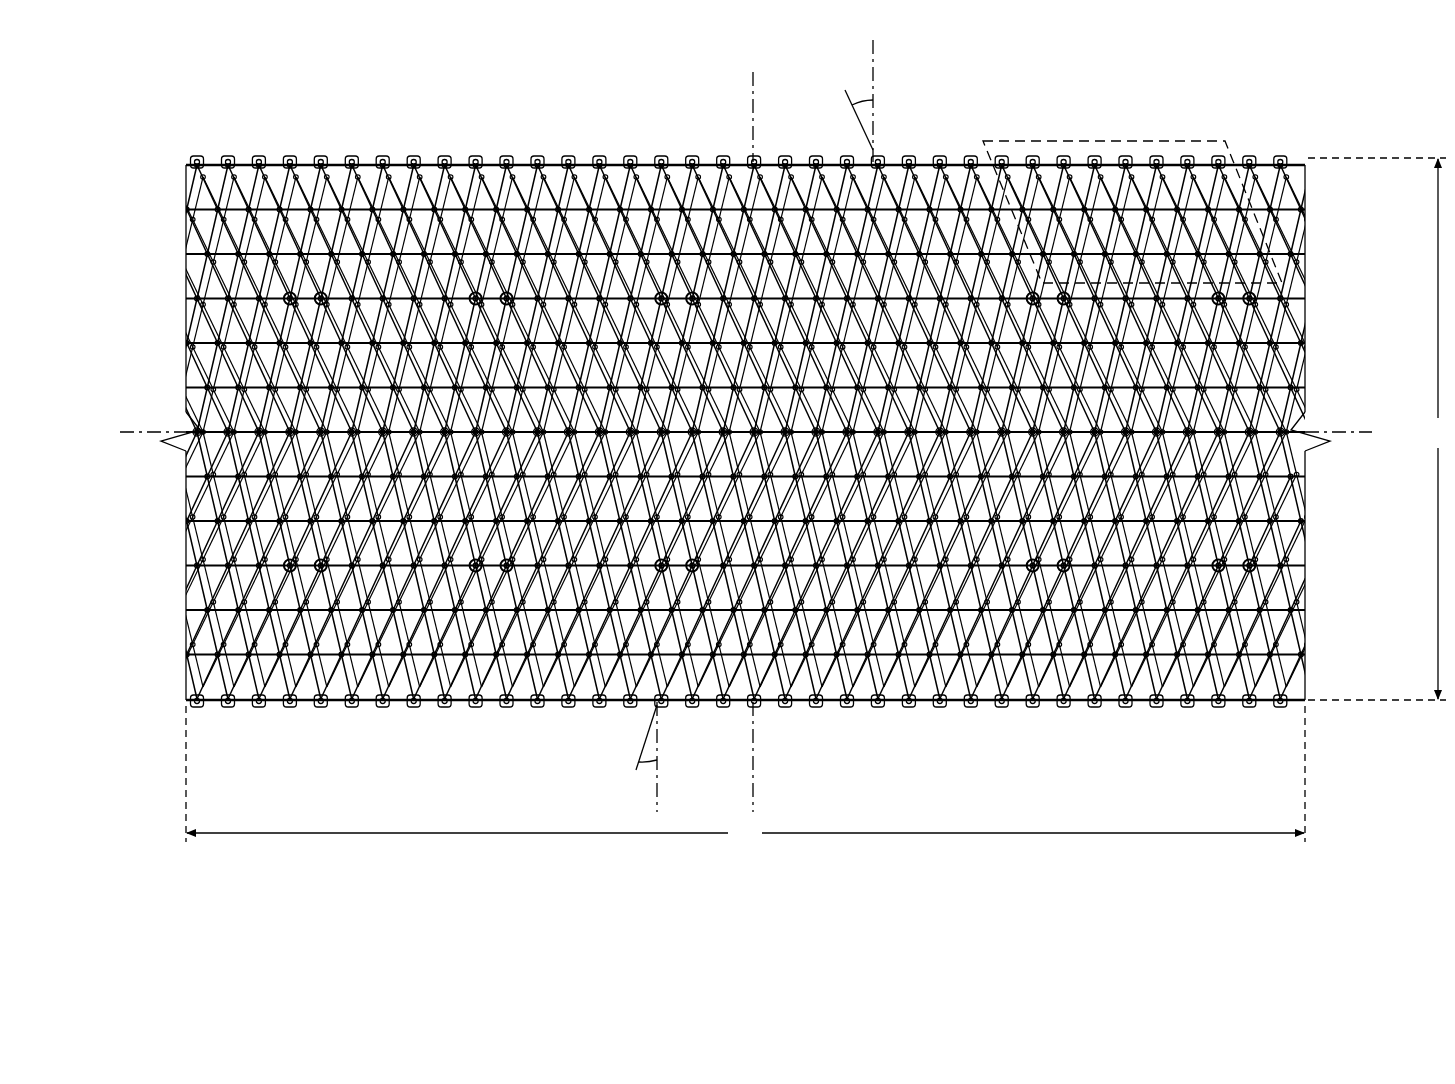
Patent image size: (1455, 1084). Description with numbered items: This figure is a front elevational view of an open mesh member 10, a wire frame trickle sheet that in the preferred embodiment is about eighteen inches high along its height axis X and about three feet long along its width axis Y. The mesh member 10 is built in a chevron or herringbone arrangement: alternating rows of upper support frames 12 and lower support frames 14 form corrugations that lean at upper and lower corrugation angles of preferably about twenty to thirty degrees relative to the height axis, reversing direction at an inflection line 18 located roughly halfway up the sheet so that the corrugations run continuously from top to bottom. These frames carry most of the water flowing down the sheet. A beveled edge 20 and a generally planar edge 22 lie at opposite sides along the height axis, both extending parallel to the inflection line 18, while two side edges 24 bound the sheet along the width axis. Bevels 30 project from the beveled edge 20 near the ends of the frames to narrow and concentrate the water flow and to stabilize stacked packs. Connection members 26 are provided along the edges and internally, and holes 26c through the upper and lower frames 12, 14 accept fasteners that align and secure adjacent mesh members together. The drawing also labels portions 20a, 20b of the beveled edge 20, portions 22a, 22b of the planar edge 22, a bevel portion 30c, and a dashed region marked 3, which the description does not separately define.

The mesh member 10 is at (318, 60).
The upper support frames 12 is at (650, 143).
The lower support frames 14 is at (622, 142).
The inflection line 18 is at (1340, 431).
The beveled edge 20 is at (698, 128).
The top chord fitting 20a is at (320, 156).
The top chord fitting 20b is at (352, 156).
The planar edge 22 is at (698, 733).
The bottom chord fitting 22a is at (323, 708).
The bottom chord fitting 22b is at (381, 708).
The side edges 24 is at (1336, 324).
The connection members 26 is at (568, 708).
The holes 26c is at (287, 296).
The bevel 30 is at (476, 156).
The fitting 30c is at (909, 156).
The detail region of FIG. 3 is at (1103, 141).